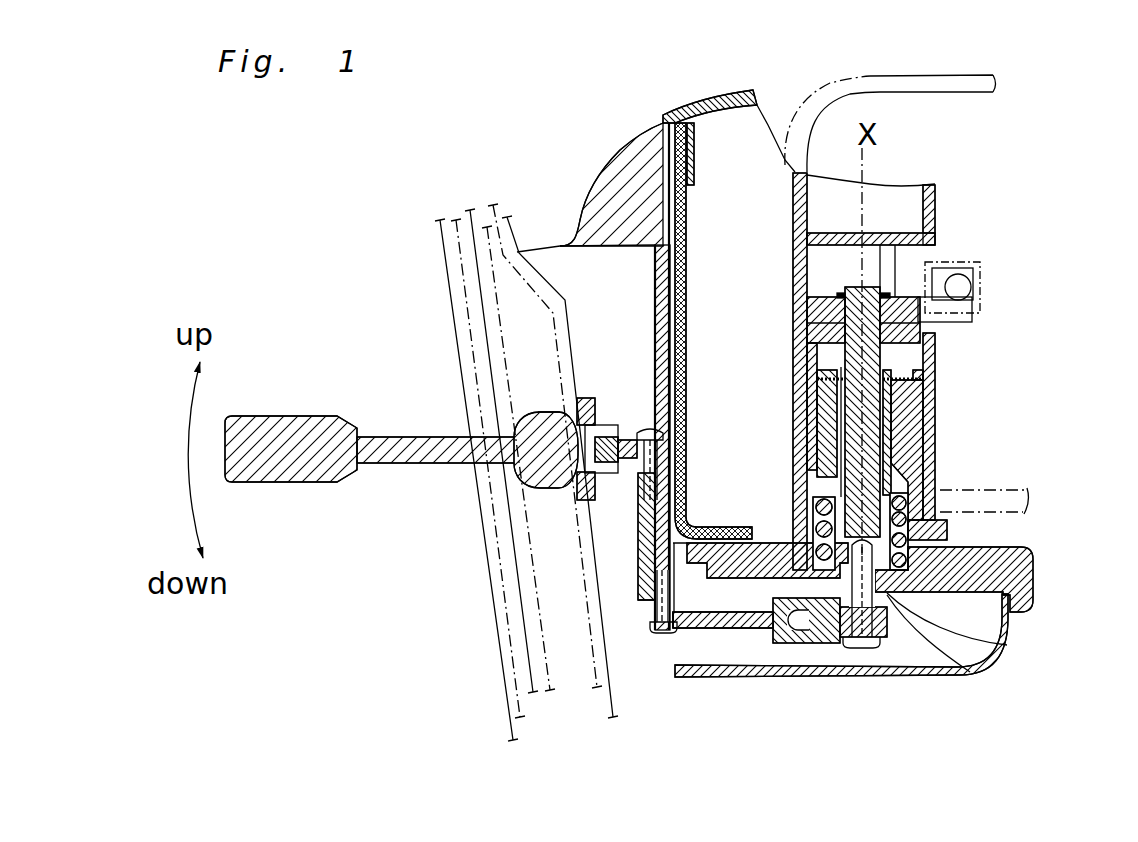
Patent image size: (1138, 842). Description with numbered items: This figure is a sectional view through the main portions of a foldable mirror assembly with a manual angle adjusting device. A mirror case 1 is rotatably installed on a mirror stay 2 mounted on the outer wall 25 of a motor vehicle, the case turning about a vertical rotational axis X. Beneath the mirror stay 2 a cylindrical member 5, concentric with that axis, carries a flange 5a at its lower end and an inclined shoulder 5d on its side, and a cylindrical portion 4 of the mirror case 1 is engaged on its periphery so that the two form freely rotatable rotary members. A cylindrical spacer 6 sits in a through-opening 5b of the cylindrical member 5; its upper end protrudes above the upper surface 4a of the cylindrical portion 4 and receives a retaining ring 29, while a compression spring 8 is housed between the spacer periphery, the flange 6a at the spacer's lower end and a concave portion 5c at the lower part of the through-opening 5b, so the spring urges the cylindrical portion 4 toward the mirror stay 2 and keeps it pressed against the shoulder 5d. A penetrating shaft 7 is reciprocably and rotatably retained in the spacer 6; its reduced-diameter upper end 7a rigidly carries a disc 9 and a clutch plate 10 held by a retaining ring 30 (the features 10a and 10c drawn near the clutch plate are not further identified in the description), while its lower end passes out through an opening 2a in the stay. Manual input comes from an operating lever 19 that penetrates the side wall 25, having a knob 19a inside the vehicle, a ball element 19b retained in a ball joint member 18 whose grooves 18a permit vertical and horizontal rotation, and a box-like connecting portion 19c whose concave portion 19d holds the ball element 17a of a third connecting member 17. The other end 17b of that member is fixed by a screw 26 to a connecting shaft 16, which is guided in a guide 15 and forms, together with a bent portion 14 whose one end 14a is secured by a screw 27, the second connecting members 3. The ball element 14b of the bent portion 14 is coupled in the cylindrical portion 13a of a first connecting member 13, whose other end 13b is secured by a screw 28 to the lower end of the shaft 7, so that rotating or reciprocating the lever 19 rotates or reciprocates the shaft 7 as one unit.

The mirror case 1 is at (740, 94).
The mirror stay 2 is at (620, 136).
The opening 2a is at (1003, 672).
The second connecting members 3 is at (633, 602).
The cylindrical portion 4 is at (939, 410).
The upper surface 4a is at (816, 392).
The cylindrical member 5 is at (912, 391).
The flange 5a is at (977, 553).
The through-opening 5b is at (906, 470).
The concave portion 5c is at (922, 522).
The inclined shoulder 5d is at (838, 478).
The cylindrical spacer 6 is at (898, 450).
The flange 6a is at (1003, 618).
The penetrating shaft 7 is at (856, 440).
The upper end 7a is at (920, 323).
The compression spring 8 is at (815, 510).
The disc 9 is at (803, 323).
The clutch plate 10 is at (822, 300).
The bearing ball 10a is at (963, 283).
The bearing seat 10c is at (940, 300).
The first connecting member 13 is at (860, 652).
The cylindrical portion 13a is at (790, 645).
The other end 13b is at (943, 630).
The bent portion 14 is at (728, 632).
The one end 14a is at (648, 634).
The ball element 14b is at (817, 652).
The guide 15 is at (628, 609).
The connecting shaft 16 is at (637, 577).
The third connecting member 17 is at (630, 426).
The ball element 17a is at (563, 420).
The other end 17b is at (693, 420).
The ball joint member 18 is at (583, 391).
The grooves 18a is at (587, 403).
The operating lever 19 is at (378, 474).
The knob 19a is at (303, 487).
The ball element 19b is at (547, 460).
The connecting portion 19c is at (600, 497).
The concave portion 19d is at (607, 380).
The outer wall 25 is at (491, 194).
The screw 26 is at (644, 428).
The screw 27 is at (663, 635).
The screw 28 is at (903, 623).
The retaining ring 29 is at (835, 385).
The retaining ring 30 is at (838, 290).